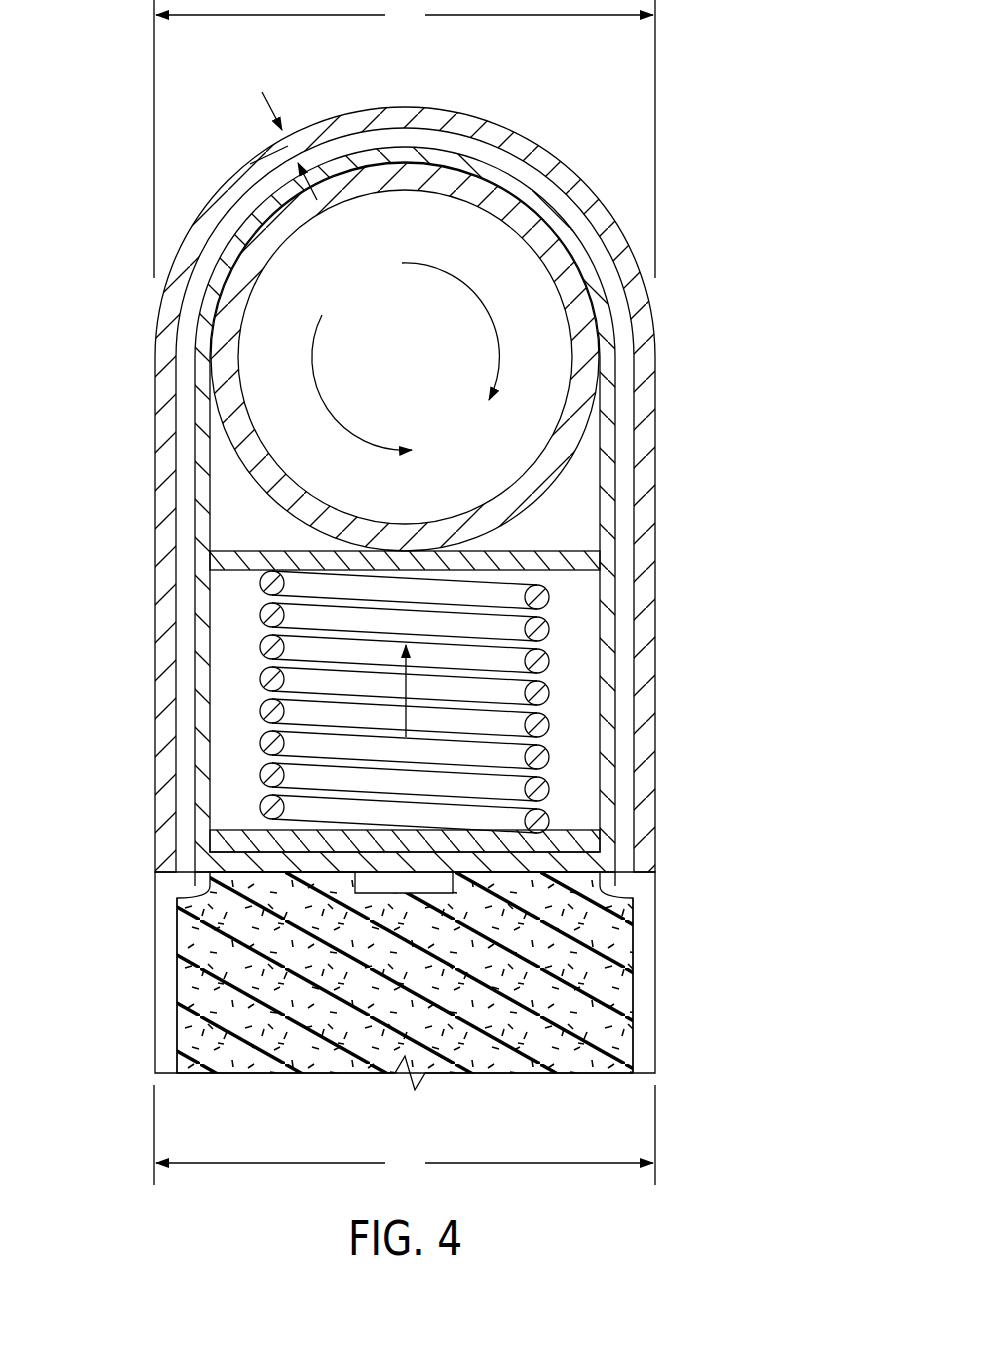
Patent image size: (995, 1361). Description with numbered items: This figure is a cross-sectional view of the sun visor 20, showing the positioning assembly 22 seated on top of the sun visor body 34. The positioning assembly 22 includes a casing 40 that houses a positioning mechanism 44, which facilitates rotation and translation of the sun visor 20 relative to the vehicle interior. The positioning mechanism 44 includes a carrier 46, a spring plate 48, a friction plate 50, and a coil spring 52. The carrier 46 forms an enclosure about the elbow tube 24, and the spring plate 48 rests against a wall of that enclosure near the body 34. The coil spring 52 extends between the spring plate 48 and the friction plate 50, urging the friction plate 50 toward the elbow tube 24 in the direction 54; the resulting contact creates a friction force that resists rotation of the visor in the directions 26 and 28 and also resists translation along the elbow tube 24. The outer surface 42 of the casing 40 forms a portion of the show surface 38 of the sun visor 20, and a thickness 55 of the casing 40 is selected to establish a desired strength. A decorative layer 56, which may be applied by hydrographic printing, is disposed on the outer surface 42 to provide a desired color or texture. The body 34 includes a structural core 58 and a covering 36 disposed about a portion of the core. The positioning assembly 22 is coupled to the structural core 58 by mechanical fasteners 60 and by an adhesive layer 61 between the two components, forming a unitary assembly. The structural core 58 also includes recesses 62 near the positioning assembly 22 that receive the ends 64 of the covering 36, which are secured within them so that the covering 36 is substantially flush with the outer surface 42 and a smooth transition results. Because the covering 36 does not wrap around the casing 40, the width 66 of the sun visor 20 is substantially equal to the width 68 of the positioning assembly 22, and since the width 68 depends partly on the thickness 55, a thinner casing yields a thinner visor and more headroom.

The sun visor 20 is at (68, 849).
The positioning assembly 22 is at (527, 112).
The elbow tube 24 is at (512, 207).
The rotation direction 26 is at (323, 404).
The rotation direction 28 is at (481, 300).
The sun visor body 34 is at (683, 1041).
The covering 36 is at (645, 990).
The show surface 38 is at (136, 988).
The casing 40 is at (643, 375).
The outer surface 42 is at (121, 416).
The positioning mechanism 44 is at (322, 702).
The carrier 46 is at (206, 610).
The spring plate 48 is at (578, 843).
The friction plate 50 is at (527, 553).
The coil spring 52 is at (266, 706).
The direction 54 is at (408, 688).
The thickness 55 is at (250, 164).
The decorative layer 56 is at (655, 447).
The structural core 58 is at (503, 966).
The mechanical fastener 60 is at (377, 897).
The adhesive layer 61 is at (252, 868).
The recess 62 is at (203, 880).
The covering end 64 is at (187, 882).
The sun visor width 66 is at (404, 1135).
The positioning assembly width 68 is at (404, 139).